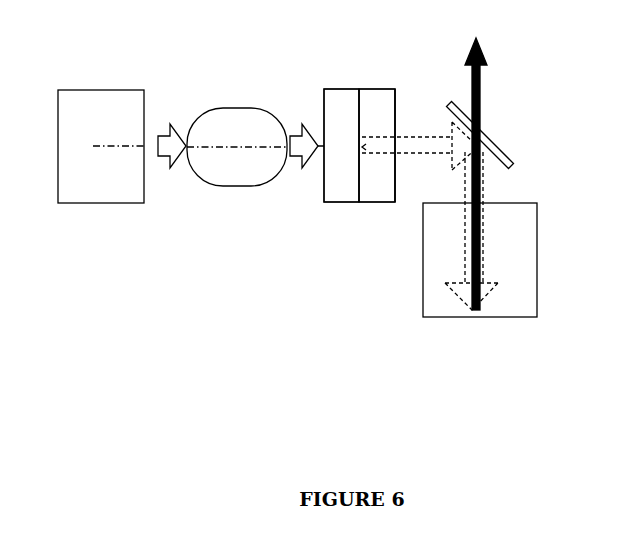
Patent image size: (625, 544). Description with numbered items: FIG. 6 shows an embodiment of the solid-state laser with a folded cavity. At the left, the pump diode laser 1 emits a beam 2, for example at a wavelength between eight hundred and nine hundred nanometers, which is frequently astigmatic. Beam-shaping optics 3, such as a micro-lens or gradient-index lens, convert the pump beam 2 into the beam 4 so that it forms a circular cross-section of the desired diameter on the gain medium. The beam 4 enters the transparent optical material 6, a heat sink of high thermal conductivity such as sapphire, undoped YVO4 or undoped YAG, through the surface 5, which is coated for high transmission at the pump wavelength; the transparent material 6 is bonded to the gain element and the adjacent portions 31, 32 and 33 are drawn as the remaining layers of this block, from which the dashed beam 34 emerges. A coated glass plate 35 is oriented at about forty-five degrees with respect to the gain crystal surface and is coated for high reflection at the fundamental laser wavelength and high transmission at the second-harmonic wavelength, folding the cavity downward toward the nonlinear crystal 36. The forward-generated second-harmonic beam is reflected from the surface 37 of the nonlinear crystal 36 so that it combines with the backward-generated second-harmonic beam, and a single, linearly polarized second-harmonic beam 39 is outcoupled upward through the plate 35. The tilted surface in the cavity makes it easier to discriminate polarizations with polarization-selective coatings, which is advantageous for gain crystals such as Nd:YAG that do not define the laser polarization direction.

The pump diode laser 1 is at (103, 102).
The pump beam 2 is at (175, 152).
The beam-shaping optics 3 is at (250, 130).
The shaped pump beam 4 is at (307, 150).
The surface of transparent optical material 5 is at (324, 102).
The transparent optical material 6 is at (340, 190).
The first surface 31 is at (358, 110).
The second optical element 32 is at (381, 103).
The second surface 33 is at (400, 105).
The output beam 34 is at (414, 155).
The coated glass plate 35 is at (517, 160).
The nonlinear crystal 36 is at (520, 222).
The surface of nonlinear crystal 37 is at (523, 325).
The second-harmonic beam 39 is at (483, 78).